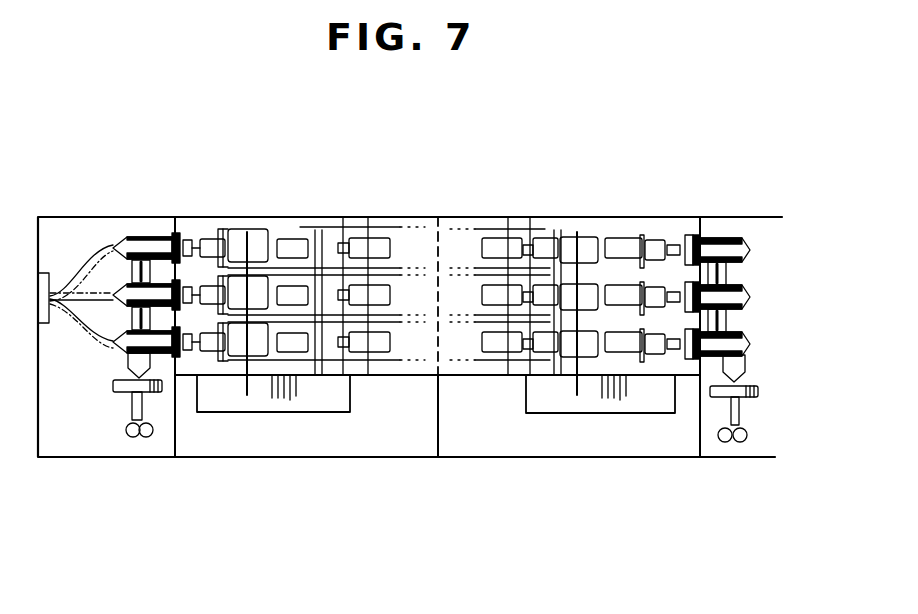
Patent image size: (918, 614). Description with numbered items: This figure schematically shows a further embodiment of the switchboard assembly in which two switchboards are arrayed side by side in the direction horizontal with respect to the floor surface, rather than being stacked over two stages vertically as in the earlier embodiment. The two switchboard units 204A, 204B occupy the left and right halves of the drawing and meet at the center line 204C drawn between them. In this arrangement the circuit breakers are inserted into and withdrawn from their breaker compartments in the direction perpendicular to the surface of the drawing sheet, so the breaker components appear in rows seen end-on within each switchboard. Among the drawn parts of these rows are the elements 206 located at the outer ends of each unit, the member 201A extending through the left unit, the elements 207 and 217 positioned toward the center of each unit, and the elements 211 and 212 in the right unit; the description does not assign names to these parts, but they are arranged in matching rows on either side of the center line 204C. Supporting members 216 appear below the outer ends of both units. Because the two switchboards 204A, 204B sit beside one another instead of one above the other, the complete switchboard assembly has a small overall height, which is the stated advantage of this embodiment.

The nozzle 206 is at (194, 237).
The drive shaft 201A is at (258, 237).
The guide rail 207 is at (343, 228).
The center partition 204C is at (425, 232).
The slider block 217 is at (403, 192).
The coupling block 212 is at (555, 232).
The holder block 211 is at (630, 235).
The left base unit 204A is at (297, 441).
The right base unit 204B is at (578, 441).
The support foot 216 is at (127, 402).